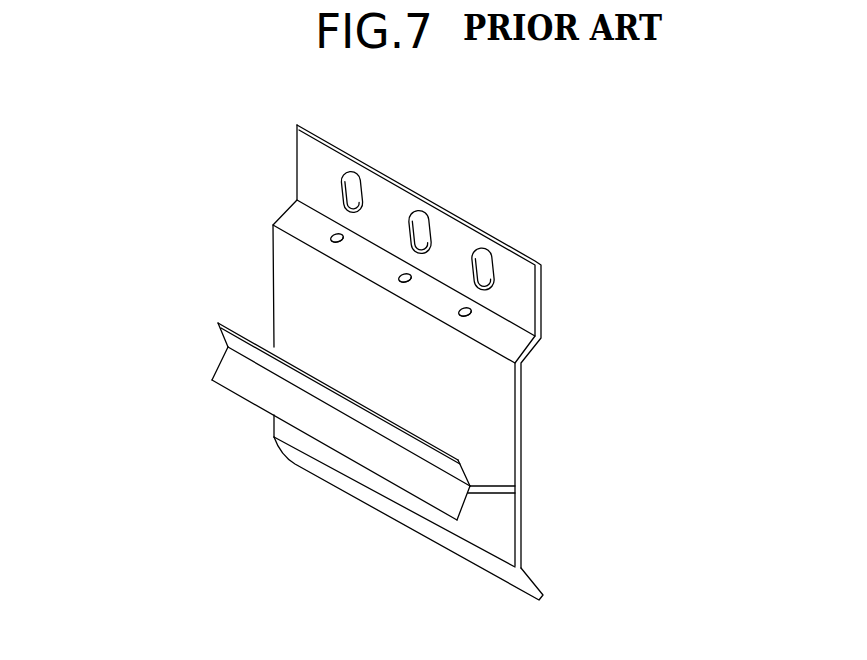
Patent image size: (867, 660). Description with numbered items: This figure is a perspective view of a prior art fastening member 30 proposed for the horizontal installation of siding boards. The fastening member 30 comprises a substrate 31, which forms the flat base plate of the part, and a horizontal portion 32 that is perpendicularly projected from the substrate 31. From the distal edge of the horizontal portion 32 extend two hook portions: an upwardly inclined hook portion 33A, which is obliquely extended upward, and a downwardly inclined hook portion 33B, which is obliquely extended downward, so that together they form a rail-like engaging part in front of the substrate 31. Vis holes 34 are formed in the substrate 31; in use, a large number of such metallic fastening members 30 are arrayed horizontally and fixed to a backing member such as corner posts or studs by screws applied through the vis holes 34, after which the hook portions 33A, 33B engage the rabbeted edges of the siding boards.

The fastening member 30 is at (646, 186).
The substrate 31 is at (490, 412).
The horizontal portion 32 is at (487, 478).
The upwardly inclined hook portion 33A is at (227, 347).
The downwardly inclined hook portion 33B is at (237, 380).
The vis holes 34 is at (420, 228).